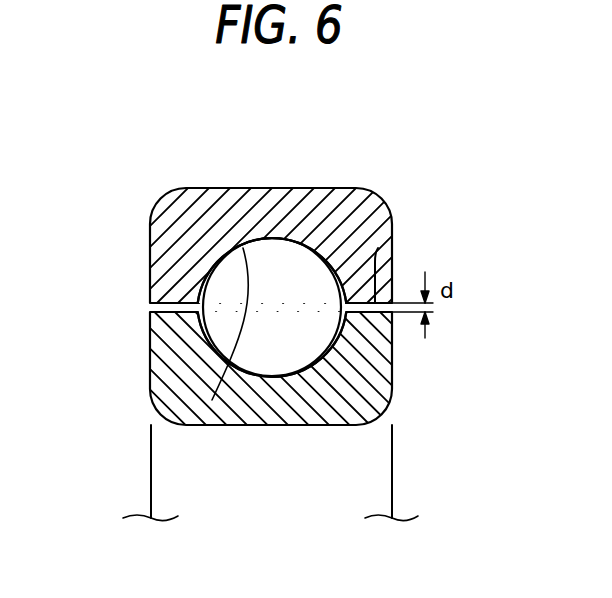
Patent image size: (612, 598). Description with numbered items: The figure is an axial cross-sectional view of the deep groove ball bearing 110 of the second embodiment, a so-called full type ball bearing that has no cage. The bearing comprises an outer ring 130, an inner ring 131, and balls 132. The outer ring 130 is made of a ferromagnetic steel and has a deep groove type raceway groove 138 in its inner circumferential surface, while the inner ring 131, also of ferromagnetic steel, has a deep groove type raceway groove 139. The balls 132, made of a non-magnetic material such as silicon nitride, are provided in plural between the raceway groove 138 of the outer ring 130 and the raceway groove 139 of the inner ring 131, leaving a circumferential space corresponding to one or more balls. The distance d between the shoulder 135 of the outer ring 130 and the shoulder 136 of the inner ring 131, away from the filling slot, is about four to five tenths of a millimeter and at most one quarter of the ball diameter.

The deep groove ball bearing 110 is at (128, 194).
The outer ring 130 is at (317, 214).
The inner ring 131 is at (278, 412).
The balls 132 is at (227, 289).
The shoulder of the outer ring 135 is at (354, 313).
The shoulder of the inner ring 136 is at (390, 220).
The raceway groove of the outer ring 138 is at (212, 400).
The raceway groove of the inner ring 139 is at (288, 370).